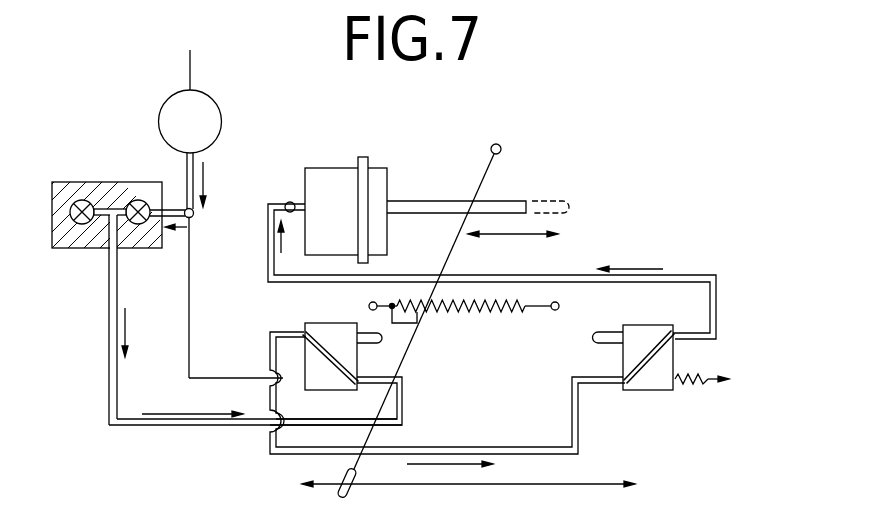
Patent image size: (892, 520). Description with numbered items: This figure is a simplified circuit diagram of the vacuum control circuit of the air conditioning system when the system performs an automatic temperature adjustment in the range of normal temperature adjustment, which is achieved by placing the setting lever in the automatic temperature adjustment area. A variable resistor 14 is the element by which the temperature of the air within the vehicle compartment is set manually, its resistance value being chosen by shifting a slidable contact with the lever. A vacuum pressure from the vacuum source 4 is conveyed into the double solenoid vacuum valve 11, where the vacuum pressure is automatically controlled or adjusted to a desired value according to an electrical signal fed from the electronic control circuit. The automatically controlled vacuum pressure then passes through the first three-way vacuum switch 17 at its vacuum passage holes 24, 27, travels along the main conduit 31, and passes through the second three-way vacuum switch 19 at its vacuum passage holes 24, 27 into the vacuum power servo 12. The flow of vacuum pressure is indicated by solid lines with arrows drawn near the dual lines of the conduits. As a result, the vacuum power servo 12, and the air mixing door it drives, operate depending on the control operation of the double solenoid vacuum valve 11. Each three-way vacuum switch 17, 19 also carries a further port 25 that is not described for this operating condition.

The vacuum source 4 is at (221, 109).
The double solenoid vacuum valve 11 is at (108, 182).
The vacuum power servo 12 is at (330, 168).
The variable resistor 14 is at (491, 313).
The first three-way vacuum switch 17 is at (332, 335).
The second three-way vacuum switch 19 is at (650, 382).
The vacuum passage hole 24 is at (358, 375).
The port 25 is at (303, 381).
The vacuum passage hole 27 is at (303, 331).
The main conduit 31 is at (467, 448).